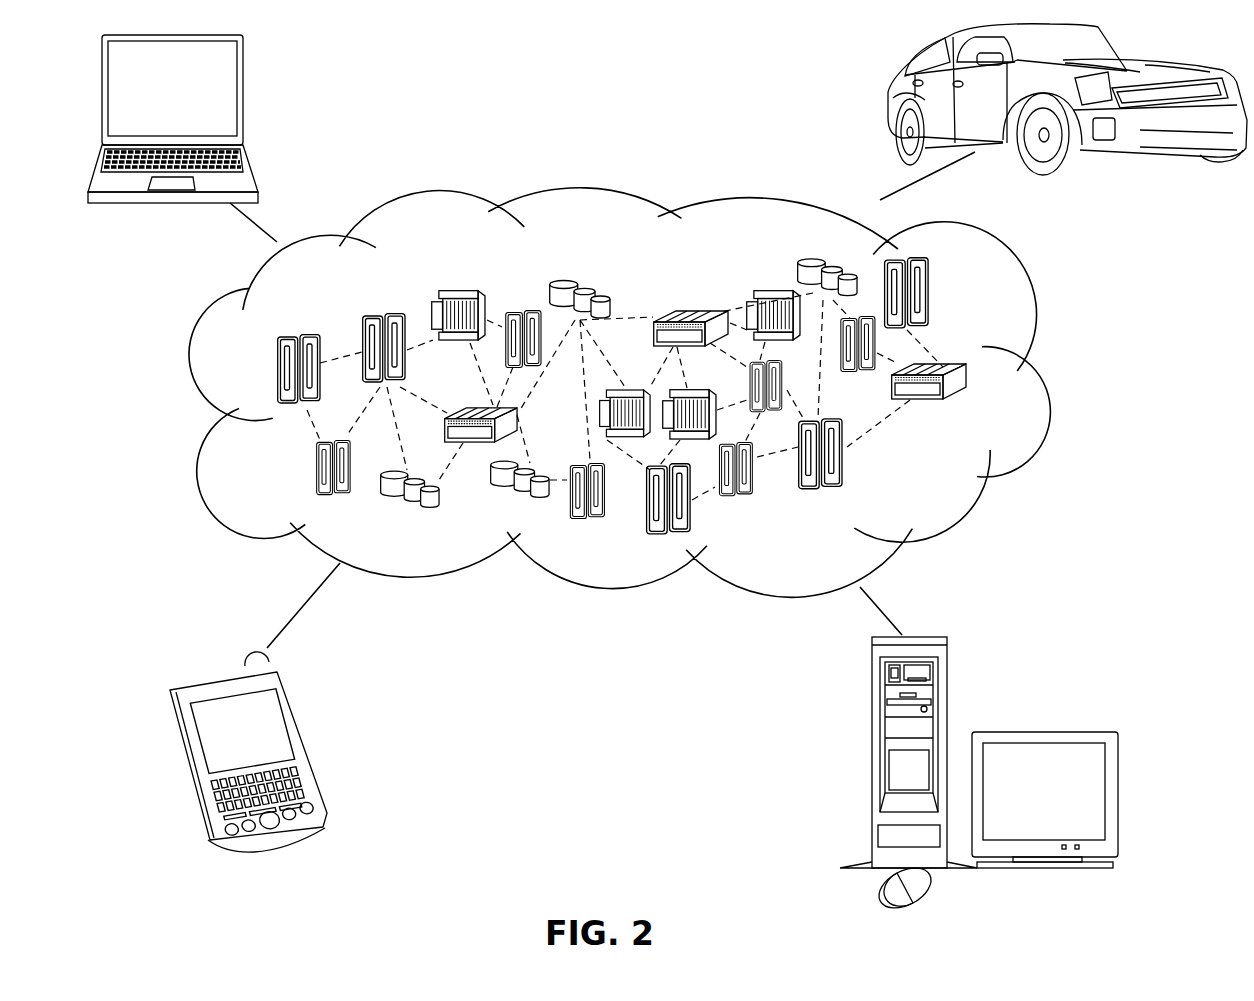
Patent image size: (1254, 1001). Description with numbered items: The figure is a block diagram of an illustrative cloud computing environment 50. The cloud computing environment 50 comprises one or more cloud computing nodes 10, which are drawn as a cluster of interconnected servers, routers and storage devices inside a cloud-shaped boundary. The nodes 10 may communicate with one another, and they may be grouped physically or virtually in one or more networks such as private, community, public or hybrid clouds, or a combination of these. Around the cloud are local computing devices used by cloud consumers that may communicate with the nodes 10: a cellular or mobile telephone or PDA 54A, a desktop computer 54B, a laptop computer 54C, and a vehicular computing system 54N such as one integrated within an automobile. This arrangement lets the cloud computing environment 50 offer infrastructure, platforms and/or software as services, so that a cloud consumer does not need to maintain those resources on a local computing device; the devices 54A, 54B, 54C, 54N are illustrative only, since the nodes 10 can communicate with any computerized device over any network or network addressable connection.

The cloud computing environment 50 is at (1040, 382).
The cloud computing nodes 10 is at (954, 484).
The cellular telephone or PDA 54A is at (300, 710).
The desktop computer 54B is at (872, 698).
The laptop computer 54C is at (243, 73).
The vehicular computing system 54N is at (888, 90).